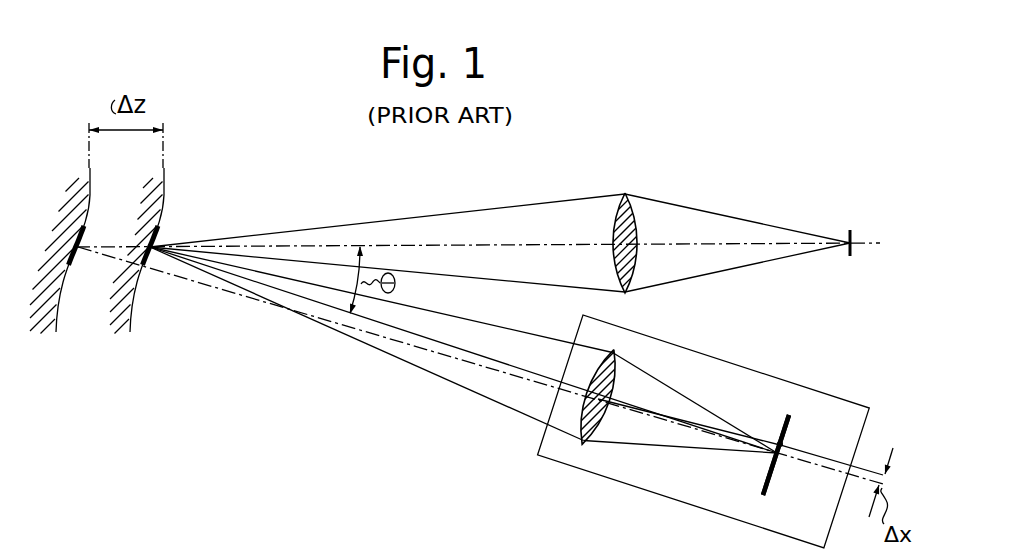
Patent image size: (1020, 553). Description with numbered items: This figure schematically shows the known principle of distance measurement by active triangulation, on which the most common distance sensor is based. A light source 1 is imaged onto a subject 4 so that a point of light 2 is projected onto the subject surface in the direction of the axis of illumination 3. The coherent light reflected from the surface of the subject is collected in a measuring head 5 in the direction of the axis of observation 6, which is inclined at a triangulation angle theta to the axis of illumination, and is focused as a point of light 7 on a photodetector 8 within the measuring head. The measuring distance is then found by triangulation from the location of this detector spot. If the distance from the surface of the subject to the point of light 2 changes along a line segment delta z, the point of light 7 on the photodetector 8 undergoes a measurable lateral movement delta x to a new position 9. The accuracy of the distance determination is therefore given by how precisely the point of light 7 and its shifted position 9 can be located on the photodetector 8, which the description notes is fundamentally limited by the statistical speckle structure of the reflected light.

The light source 1 is at (853, 236).
The point of light 2 is at (157, 240).
The axis of illumination 3 is at (535, 243).
The subject 4 is at (163, 197).
The measuring head 5 is at (676, 497).
The axis of observation 6 is at (490, 360).
The point of light 7 is at (773, 458).
The photodetector 8 is at (788, 418).
The position 9 is at (782, 443).